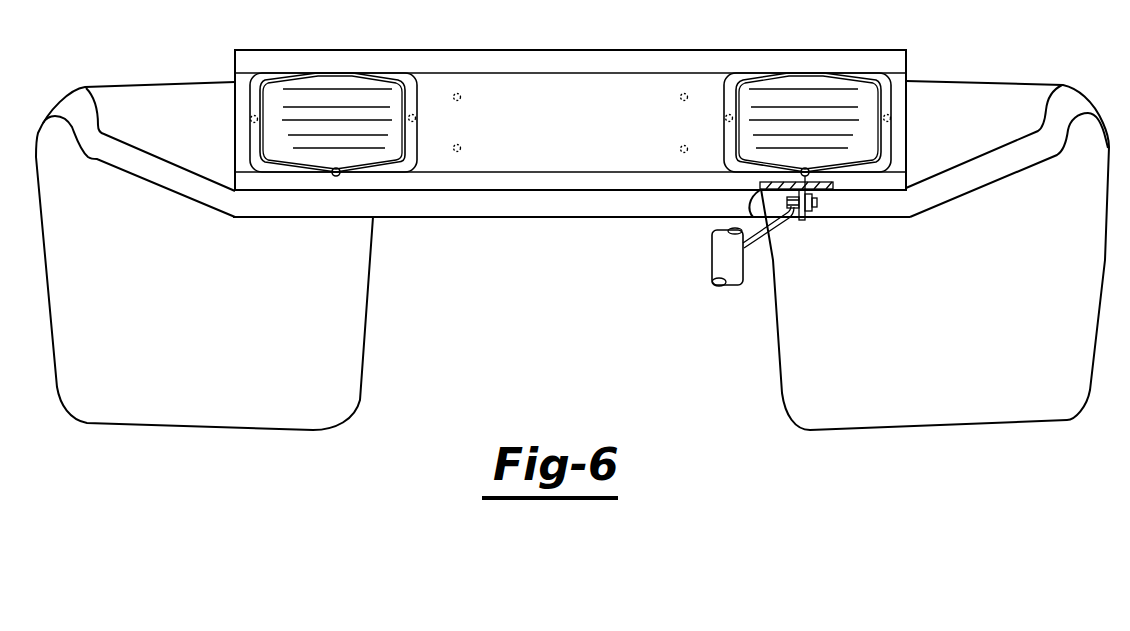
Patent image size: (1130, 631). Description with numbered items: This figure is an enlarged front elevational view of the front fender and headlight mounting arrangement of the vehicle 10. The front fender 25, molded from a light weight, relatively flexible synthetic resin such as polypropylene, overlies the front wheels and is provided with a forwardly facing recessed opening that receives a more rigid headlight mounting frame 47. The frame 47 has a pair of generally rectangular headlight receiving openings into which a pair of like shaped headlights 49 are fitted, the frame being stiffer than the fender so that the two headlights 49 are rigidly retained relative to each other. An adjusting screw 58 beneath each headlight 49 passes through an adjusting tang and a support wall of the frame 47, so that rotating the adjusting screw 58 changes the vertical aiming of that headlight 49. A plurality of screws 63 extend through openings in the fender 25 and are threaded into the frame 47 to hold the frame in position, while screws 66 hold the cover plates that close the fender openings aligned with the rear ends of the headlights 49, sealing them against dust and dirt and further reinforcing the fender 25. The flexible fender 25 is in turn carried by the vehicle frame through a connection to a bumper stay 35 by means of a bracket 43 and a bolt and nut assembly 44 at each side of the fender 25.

The vehicle 10 is at (542, 118).
The front fender 25 is at (995, 85).
The bumper stay 35 is at (712, 265).
The bracket 43 is at (758, 237).
The bolt and nut assembly 44 is at (813, 212).
The headlight mounting frame 47 is at (588, 50).
The headlight 49 is at (276, 86).
The adjusting screw 58 is at (336, 177).
The screw 63 is at (461, 96).
The screw 66 is at (250, 119).